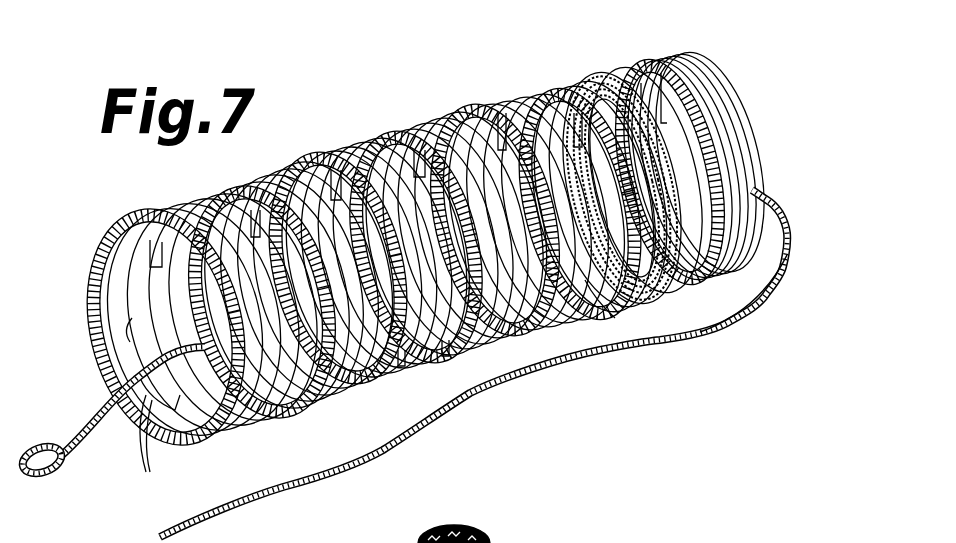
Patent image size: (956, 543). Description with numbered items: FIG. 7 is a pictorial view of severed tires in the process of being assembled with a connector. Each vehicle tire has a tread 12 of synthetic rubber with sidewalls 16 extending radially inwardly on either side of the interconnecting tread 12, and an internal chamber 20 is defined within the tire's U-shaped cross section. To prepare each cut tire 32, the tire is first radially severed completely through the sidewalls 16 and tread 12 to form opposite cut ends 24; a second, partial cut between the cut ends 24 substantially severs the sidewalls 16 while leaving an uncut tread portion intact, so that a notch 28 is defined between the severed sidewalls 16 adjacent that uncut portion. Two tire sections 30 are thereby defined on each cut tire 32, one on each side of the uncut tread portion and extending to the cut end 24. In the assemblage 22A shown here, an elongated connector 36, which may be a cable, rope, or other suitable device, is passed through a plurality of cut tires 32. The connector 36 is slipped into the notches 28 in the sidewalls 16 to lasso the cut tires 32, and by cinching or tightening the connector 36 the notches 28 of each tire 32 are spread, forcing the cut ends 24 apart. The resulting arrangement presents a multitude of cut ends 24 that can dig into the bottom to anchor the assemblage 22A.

The tread 12 is at (752, 123).
The sidewalls 16 is at (745, 208).
The internal chamber 20 is at (128, 350).
The assemblage 22A is at (770, 328).
The cut ends 24 is at (148, 460).
The notch 28 is at (100, 240).
The tire sections 30 is at (241, 427).
The cut tire 32 is at (170, 209).
The connector 36 is at (92, 440).